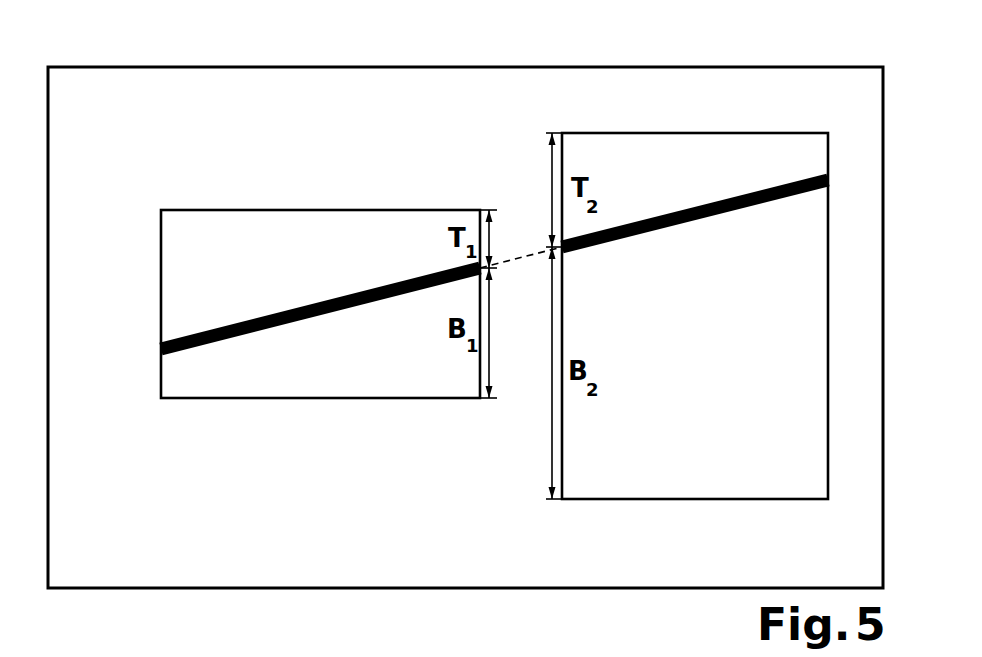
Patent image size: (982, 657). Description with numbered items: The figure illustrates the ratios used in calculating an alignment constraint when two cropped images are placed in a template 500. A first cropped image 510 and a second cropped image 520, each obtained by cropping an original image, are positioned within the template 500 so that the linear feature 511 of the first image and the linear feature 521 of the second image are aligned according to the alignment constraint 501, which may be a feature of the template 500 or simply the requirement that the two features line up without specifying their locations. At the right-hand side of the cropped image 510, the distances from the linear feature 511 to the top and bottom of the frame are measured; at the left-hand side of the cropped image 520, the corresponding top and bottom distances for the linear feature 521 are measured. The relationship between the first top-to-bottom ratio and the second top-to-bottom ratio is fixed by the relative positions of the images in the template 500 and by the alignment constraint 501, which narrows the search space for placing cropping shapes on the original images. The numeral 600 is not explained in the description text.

The template 500 is at (540, 67).
The alignment constraint 501 is at (510, 258).
The cropped image 510 is at (315, 210).
The linear feature 511 is at (313, 303).
The cropped image 520 is at (693, 133).
The linear feature 521 is at (693, 207).
The sheet 600 is at (483, 649).